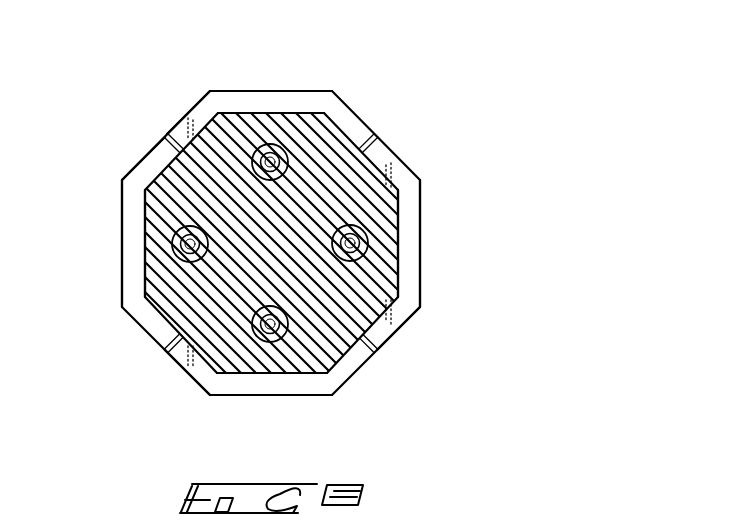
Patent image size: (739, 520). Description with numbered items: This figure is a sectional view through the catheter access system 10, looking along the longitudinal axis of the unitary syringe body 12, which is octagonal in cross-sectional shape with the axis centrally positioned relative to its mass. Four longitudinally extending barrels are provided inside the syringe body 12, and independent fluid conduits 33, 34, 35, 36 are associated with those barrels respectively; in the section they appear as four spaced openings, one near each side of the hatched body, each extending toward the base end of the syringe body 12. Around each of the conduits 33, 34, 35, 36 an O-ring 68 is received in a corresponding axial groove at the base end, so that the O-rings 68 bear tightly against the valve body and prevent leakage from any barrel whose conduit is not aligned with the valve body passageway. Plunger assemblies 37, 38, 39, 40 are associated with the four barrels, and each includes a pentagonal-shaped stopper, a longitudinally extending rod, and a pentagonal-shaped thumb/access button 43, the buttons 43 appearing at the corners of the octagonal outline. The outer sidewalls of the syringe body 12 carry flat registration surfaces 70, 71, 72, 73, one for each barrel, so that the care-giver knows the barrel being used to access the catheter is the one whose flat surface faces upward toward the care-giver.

The catheter access system 10 is at (448, 64).
The syringe body 12 is at (403, 308).
The fluid conduit 33 is at (271, 158).
The fluid conduit 34 is at (188, 242).
The fluid conduit 35 is at (270, 330).
The fluid conduit 36 is at (368, 253).
The plunger assembly 37 is at (198, 95).
The plunger assembly 38 is at (134, 154).
The plunger assembly 39 is at (315, 404).
The plunger assembly 40 is at (425, 280).
The thumb/access button 43 is at (347, 123).
The O-ring 68 is at (257, 147).
The flat registration surface 70 is at (306, 113).
The flat registration surface 71 is at (143, 202).
The flat registration surface 72 is at (292, 375).
The flat registration surface 73 is at (400, 213).